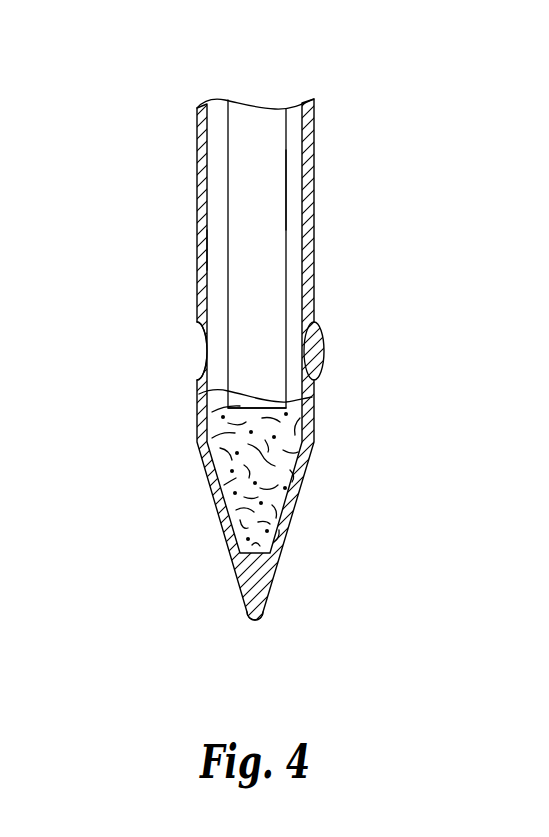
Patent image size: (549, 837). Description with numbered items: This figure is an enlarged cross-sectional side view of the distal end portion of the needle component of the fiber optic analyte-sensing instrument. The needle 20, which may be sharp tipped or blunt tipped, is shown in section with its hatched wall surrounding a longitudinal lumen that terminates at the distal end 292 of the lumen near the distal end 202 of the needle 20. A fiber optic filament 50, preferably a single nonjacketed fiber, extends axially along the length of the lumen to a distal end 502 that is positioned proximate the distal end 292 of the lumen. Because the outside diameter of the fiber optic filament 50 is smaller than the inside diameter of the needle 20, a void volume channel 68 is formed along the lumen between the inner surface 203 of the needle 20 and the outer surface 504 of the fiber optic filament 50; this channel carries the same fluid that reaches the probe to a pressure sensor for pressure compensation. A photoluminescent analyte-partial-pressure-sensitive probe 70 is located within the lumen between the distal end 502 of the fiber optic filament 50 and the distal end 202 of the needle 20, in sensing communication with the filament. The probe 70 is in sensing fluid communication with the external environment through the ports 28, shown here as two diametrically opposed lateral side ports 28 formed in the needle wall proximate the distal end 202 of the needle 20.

The needle 20 is at (202, 188).
The void volume channel 68 is at (217, 82).
The fiber optic filament 50 is at (255, 123).
The outer surface of fiber optic filament 504 is at (286, 181).
The distal end of fiber optic filament 502 is at (213, 417).
The inner surface of needle 203 is at (210, 260).
The distal end of lumen 292 is at (243, 302).
The port 28 is at (160, 344).
The photoluminescent analyte-partial-pressure-sensitive probe 70 is at (278, 453).
The distal end of needle 202 is at (255, 624).